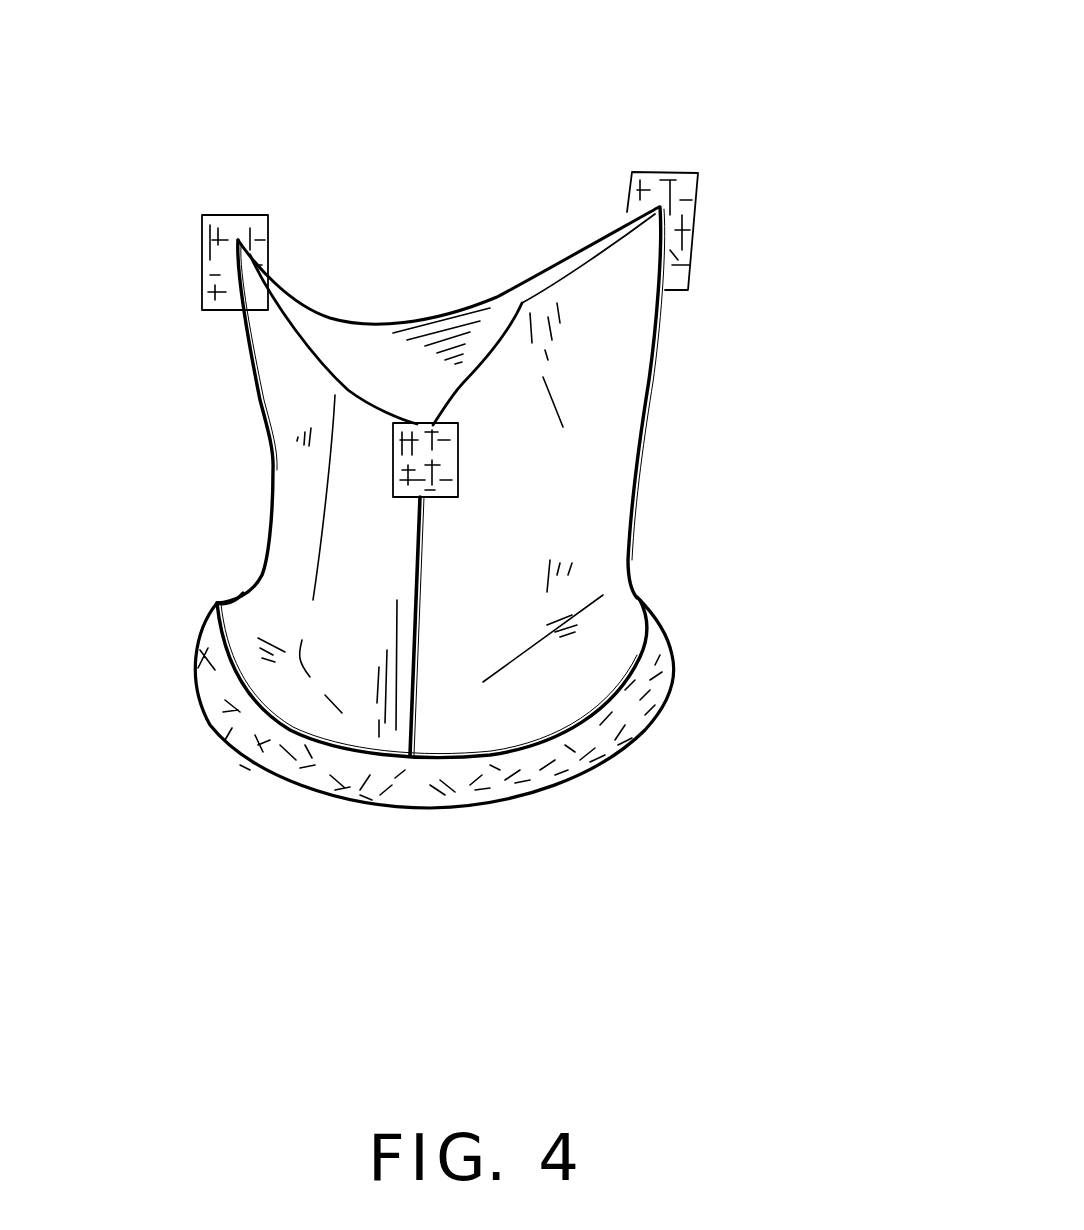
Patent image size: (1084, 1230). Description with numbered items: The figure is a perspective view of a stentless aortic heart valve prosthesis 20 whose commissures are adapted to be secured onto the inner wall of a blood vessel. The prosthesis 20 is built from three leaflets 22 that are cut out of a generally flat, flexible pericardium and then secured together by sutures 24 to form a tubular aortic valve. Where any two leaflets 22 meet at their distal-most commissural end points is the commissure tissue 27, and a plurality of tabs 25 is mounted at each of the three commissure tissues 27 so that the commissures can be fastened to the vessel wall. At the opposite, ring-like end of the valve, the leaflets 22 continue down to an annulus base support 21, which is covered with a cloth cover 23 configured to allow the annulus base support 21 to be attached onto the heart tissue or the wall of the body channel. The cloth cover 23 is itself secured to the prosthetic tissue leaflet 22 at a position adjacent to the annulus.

The aortic heart valve prosthesis 20 is at (503, 196).
The annulus base support 21 is at (647, 723).
The leaflets 22 is at (320, 335).
The cloth cover 23 is at (643, 653).
The sutures 24 is at (635, 512).
The tabs 25 is at (230, 217).
The commissure tissue 27 is at (263, 216).